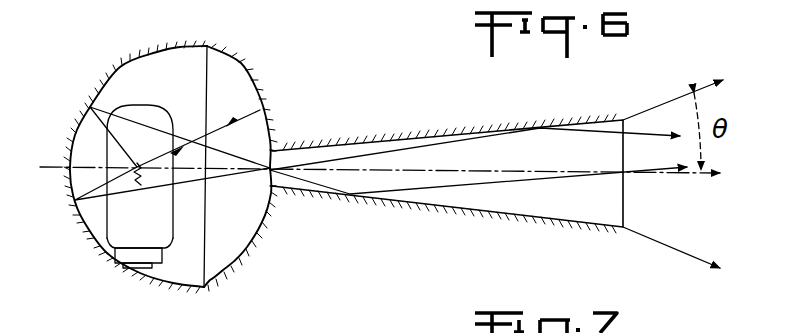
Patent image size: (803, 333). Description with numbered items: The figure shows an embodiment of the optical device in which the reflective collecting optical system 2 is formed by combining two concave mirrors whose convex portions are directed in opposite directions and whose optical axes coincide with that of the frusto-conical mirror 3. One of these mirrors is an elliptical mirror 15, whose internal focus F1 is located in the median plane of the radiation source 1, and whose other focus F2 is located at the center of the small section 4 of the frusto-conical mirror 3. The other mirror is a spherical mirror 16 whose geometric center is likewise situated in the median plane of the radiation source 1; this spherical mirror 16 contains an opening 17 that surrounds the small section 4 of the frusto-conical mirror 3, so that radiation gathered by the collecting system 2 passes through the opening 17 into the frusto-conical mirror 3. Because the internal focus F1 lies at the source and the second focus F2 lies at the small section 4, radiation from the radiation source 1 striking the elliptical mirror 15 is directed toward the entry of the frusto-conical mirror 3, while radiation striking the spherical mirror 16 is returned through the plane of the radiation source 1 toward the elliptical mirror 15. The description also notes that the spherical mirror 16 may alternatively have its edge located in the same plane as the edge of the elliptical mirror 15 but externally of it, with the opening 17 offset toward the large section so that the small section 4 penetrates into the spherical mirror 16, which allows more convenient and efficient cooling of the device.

The radiation source 1 is at (141, 184).
The reflective collecting optical system 2 is at (222, 46).
The frusto-conical mirror 3 is at (440, 132).
The small section 4 is at (265, 176).
The elliptical mirror 15 is at (132, 63).
The spherical mirror 16 is at (252, 82).
The opening 17 is at (273, 150).
The internal focus F1 is at (139, 166).
The focus F2 is at (280, 184).